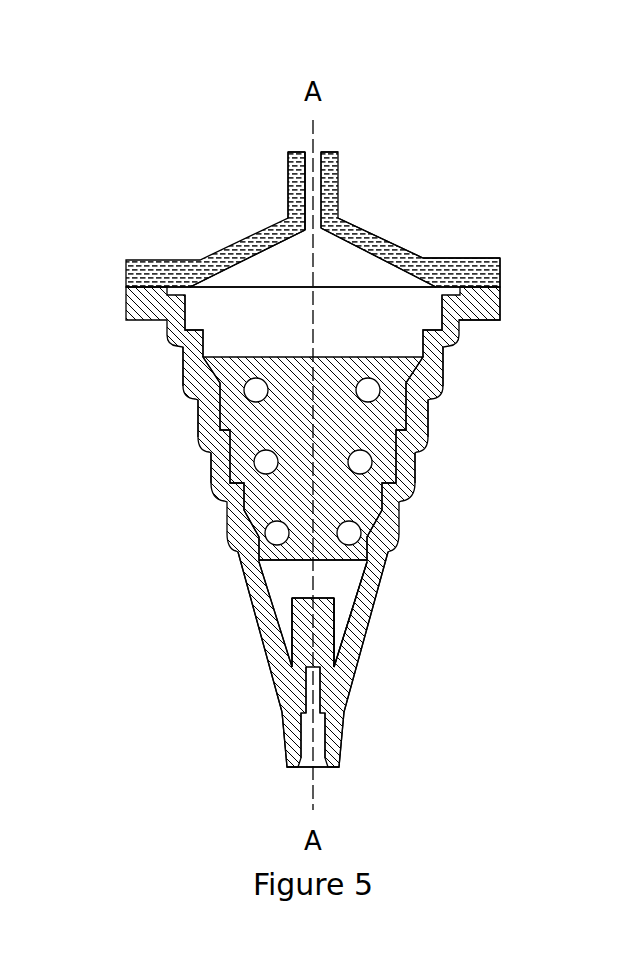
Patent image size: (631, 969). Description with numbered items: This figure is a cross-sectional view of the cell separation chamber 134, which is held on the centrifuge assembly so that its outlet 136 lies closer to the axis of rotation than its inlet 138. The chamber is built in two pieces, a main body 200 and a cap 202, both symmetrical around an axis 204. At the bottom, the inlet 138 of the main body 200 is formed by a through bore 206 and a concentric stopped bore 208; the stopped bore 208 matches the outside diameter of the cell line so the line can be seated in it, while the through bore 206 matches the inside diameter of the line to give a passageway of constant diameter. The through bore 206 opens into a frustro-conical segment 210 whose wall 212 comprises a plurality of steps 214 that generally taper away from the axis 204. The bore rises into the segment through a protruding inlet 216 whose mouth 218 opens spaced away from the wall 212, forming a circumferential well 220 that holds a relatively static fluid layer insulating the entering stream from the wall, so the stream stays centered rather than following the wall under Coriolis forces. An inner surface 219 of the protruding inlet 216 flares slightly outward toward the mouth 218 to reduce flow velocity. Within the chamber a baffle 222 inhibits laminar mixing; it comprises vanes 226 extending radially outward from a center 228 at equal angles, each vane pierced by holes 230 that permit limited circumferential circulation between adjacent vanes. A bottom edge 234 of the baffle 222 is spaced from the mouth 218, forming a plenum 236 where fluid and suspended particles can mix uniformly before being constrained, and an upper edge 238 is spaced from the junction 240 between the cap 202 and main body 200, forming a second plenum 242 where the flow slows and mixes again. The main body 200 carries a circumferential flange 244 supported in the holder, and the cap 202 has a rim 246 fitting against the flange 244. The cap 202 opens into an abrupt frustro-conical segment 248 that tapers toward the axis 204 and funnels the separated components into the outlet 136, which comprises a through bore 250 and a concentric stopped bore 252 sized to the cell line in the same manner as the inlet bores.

The cell separation chamber 134 is at (299, 417).
The outlet 136 is at (330, 137).
The inlet 138 is at (335, 782).
The main body 200 is at (140, 390).
The cap 202 is at (220, 215).
The axis 204 is at (311, 133).
The through bore 206 is at (315, 668).
The stopped bore 208 is at (317, 728).
The frustro-conical segment 210 is at (232, 678).
The wall 212 is at (257, 613).
The steps 214 is at (417, 380).
The protruding inlet 216 is at (337, 635).
The mouth 218 is at (293, 598).
The inner surface 219 is at (297, 610).
The circumferential well 220 is at (352, 607).
The baffle 222 is at (241, 448).
The vanes 226 is at (385, 355).
The center 228 is at (317, 370).
The holes 230 is at (363, 460).
The bottom edge 234 is at (363, 568).
The plenum 236 is at (282, 576).
The upper edge 238 is at (332, 443).
The junction 240 is at (500, 285).
The second plenum 242 is at (350, 304).
The circumferential flange 244 is at (502, 307).
The rim 246 is at (502, 262).
The abrupt frustro-conical segment 248 is at (342, 260).
The through bore 250 is at (310, 231).
The stopped bore 252 is at (303, 181).